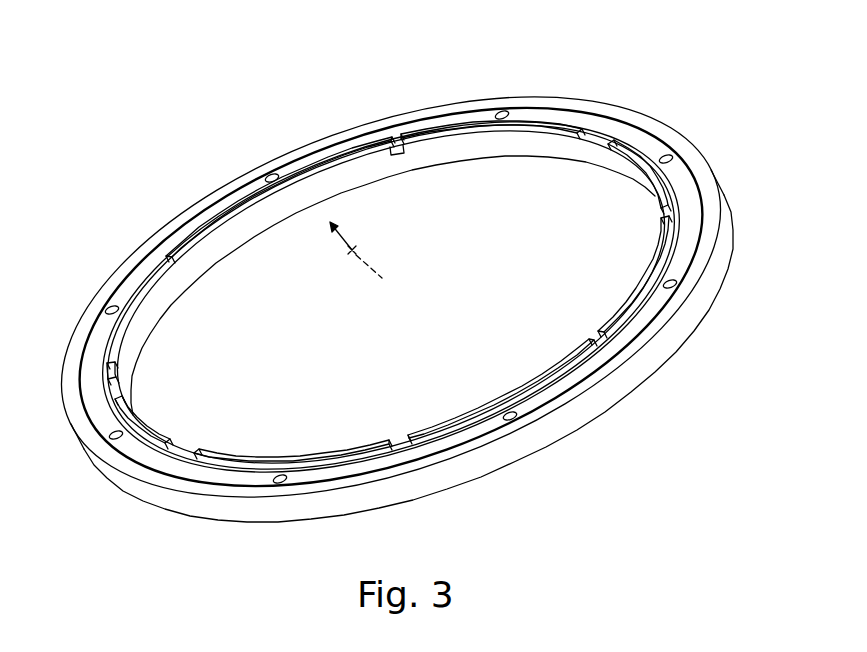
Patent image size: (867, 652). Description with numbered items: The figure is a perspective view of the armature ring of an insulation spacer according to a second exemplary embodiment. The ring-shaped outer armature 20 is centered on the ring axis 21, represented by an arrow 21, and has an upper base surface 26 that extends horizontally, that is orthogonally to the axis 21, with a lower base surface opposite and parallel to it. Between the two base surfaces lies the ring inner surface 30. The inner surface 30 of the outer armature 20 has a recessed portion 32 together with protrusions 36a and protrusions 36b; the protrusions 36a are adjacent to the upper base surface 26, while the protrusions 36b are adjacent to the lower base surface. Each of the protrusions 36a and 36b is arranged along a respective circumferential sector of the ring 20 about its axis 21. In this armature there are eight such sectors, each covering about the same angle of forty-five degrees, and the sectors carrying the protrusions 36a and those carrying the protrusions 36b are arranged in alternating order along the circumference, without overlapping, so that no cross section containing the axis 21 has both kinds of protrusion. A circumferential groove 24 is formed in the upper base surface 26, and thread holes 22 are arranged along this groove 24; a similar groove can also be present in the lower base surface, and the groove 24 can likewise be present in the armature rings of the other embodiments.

The outer armature 20 is at (213, 200).
The axis 21 is at (354, 251).
The thread holes 22 is at (676, 285).
The circumferential groove 24 is at (150, 280).
The upper base surface 26 is at (285, 152).
The inner surface 30 is at (398, 154).
The recessed portion 32 is at (455, 148).
The protrusions 36a is at (558, 126).
The protrusions 36b is at (622, 172).